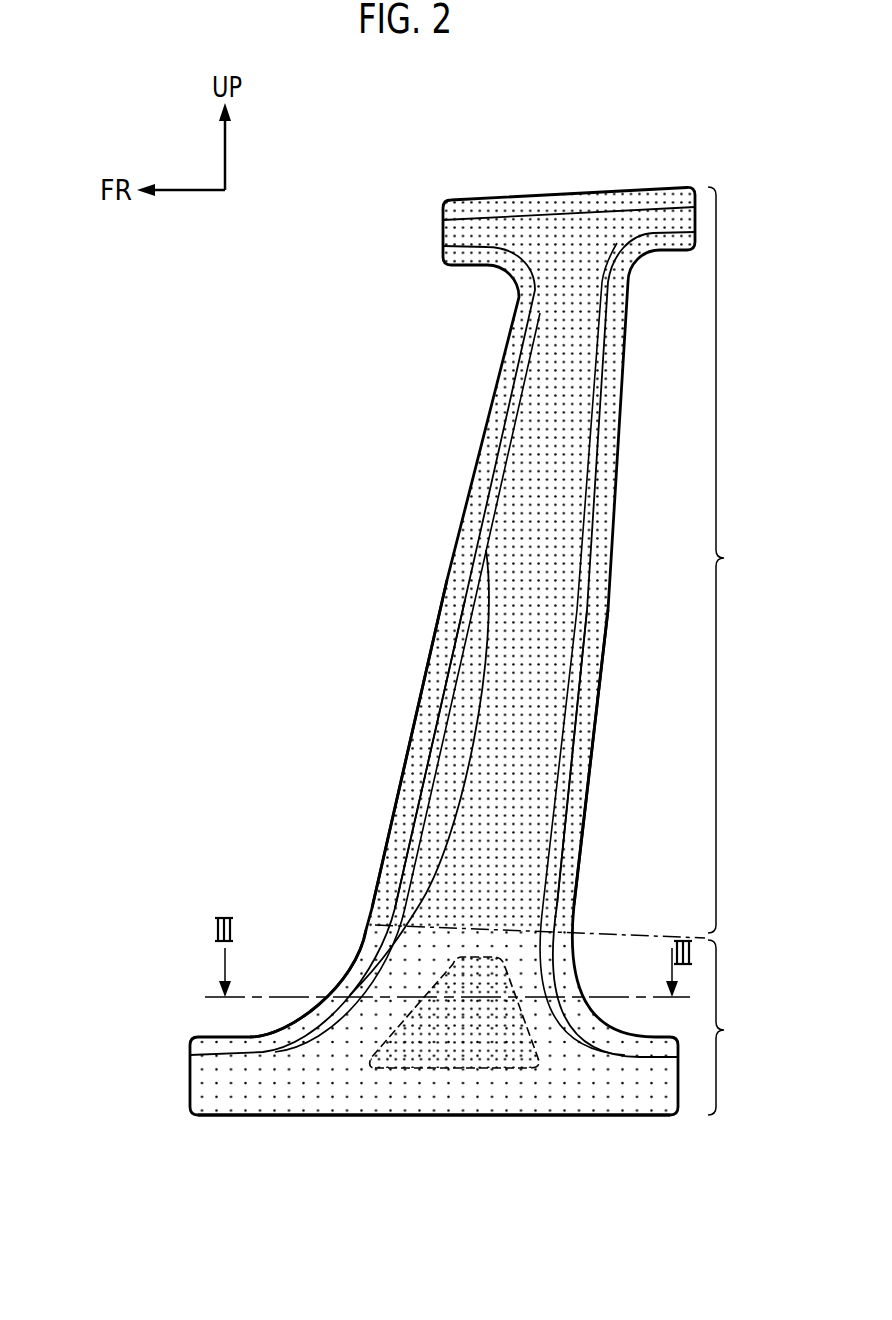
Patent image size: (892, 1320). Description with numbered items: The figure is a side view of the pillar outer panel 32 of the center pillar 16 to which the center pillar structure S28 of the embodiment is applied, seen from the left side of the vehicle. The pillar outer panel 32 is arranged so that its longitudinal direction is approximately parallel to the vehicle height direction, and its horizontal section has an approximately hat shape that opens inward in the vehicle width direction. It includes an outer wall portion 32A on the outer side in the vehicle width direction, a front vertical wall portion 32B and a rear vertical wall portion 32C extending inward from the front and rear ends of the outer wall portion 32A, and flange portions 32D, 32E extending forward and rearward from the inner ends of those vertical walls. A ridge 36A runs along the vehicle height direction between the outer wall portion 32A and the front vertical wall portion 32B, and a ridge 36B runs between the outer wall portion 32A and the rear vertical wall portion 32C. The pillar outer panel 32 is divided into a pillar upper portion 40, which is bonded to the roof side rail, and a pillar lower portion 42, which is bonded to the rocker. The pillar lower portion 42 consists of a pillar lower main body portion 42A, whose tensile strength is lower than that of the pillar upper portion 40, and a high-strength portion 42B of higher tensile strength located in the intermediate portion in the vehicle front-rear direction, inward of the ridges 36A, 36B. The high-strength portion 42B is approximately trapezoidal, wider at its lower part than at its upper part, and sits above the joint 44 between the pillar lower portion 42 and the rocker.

The center pillar 16 is at (638, 408).
The pillar outer panel 32 is at (442, 644).
The outer wall portion 32A is at (530, 617).
The front vertical wall portion 32B is at (440, 725).
The rear vertical wall portion 32C is at (578, 655).
The flange portion 32D is at (412, 777).
The flange portion 32E is at (583, 743).
The ridge 36A is at (458, 662).
The ridge 36B is at (583, 530).
The pillar upper portion 40 is at (566, 562).
The pillar lower portion 42 is at (477, 1038).
The pillar lower main body portion 42A is at (393, 980).
The high-strength portion 42B is at (455, 1047).
The joint 44 is at (533, 1100).
The center pillar structure S28 is at (305, 820).